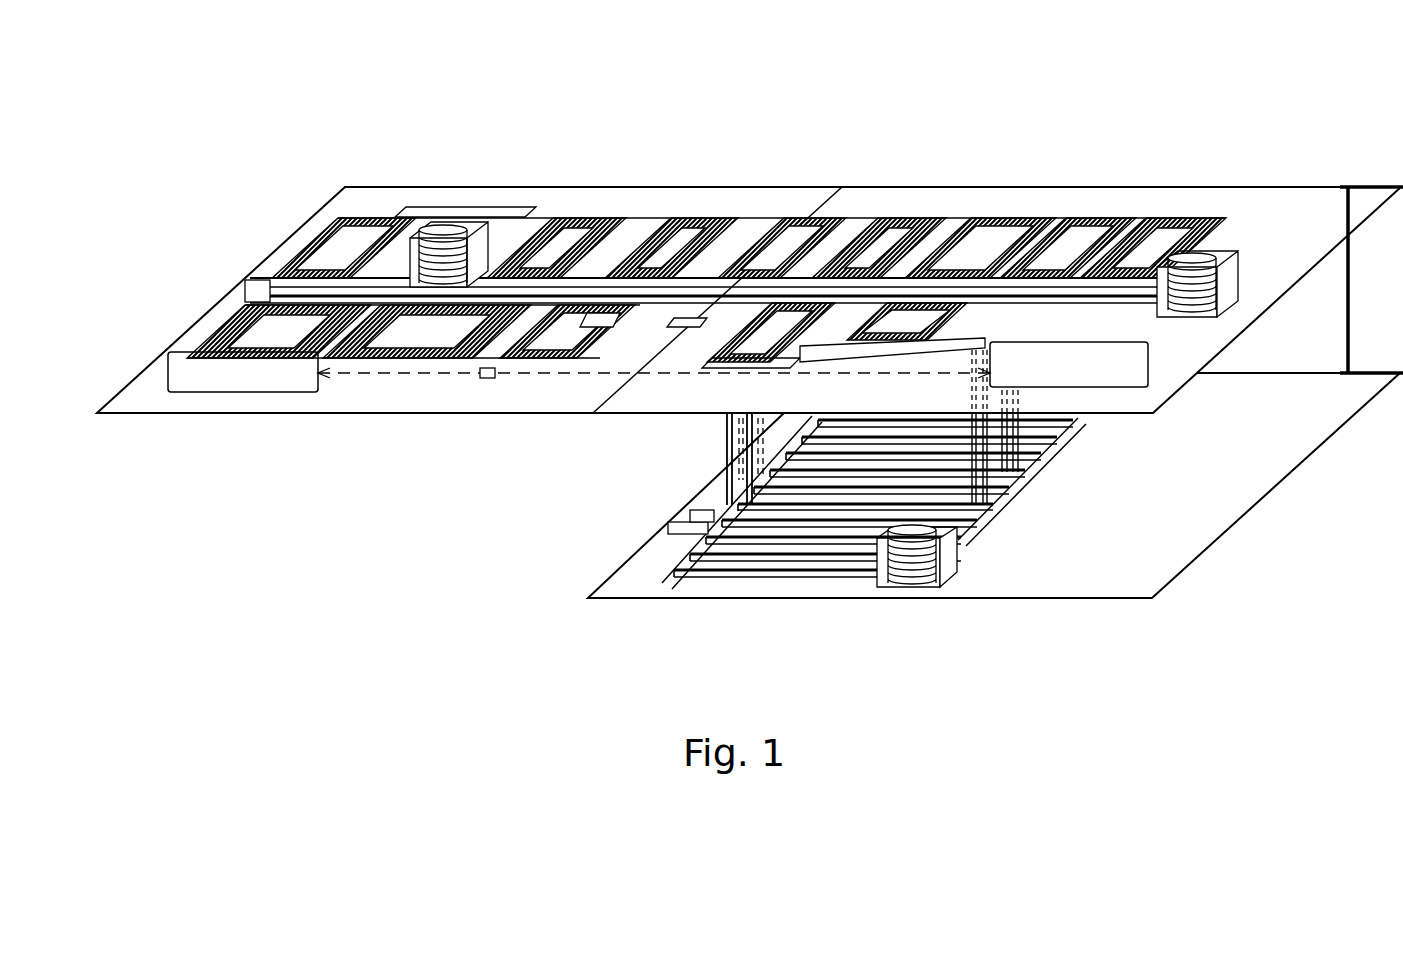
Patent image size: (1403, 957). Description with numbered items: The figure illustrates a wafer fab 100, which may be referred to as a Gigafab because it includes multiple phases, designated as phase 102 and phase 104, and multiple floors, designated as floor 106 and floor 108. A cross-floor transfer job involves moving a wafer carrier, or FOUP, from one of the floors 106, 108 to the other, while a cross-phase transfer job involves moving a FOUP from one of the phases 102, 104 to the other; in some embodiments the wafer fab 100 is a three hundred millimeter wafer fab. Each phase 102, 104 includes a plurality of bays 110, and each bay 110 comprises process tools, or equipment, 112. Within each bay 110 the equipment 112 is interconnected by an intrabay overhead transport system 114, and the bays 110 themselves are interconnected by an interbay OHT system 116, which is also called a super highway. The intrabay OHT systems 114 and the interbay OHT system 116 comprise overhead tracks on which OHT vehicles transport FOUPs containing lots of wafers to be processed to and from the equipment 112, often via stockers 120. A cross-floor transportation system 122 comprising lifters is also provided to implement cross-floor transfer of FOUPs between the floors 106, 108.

The wafer fab 100 is at (273, 104).
The phase 102 is at (1400, 106).
The phase 104 is at (592, 419).
The floor 106 is at (1168, 602).
The floor 108 is at (1402, 190).
The bay 110 is at (718, 206).
The process tool 112 is at (410, 210).
The intrabay overhead transport system 114 is at (592, 223).
The interbay OHT system 116 is at (255, 290).
The stocker 120 is at (452, 228).
The cross-floor transportation system 122 is at (714, 505).